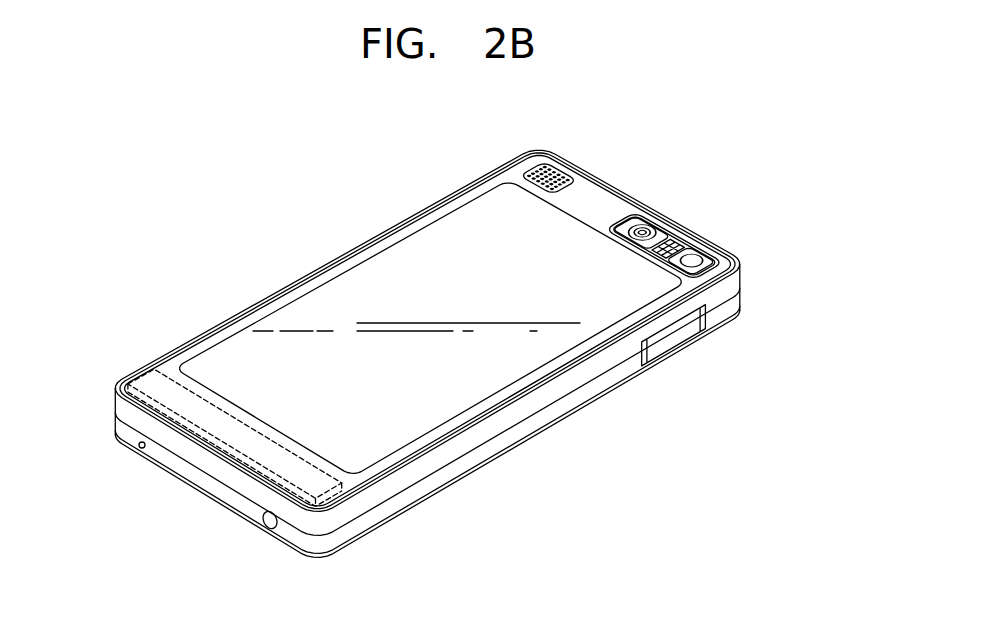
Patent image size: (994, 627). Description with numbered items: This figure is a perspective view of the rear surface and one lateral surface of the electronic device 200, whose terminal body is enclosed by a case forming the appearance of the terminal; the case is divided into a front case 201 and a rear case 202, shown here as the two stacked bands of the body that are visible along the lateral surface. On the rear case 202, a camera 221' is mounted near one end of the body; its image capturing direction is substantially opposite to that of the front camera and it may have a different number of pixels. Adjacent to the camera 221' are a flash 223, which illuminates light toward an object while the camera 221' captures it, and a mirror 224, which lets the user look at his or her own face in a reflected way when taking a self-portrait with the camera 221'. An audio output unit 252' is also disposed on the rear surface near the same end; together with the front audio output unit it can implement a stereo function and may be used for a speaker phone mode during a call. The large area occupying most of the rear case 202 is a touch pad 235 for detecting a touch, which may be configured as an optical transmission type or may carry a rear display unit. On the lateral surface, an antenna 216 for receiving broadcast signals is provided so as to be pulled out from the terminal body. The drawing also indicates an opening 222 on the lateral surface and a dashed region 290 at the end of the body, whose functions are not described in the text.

The electronic device 200 is at (386, 195).
The front case 201 is at (732, 309).
The rear case 202 is at (732, 289).
The antenna 216 is at (266, 519).
The camera 221' is at (667, 211).
The microphone 222 is at (139, 447).
The flash 223 is at (667, 243).
The mirror 224 is at (693, 262).
The touch pad 235 is at (352, 285).
The audio output unit 252' is at (583, 162).
The antenna module 290 is at (150, 383).